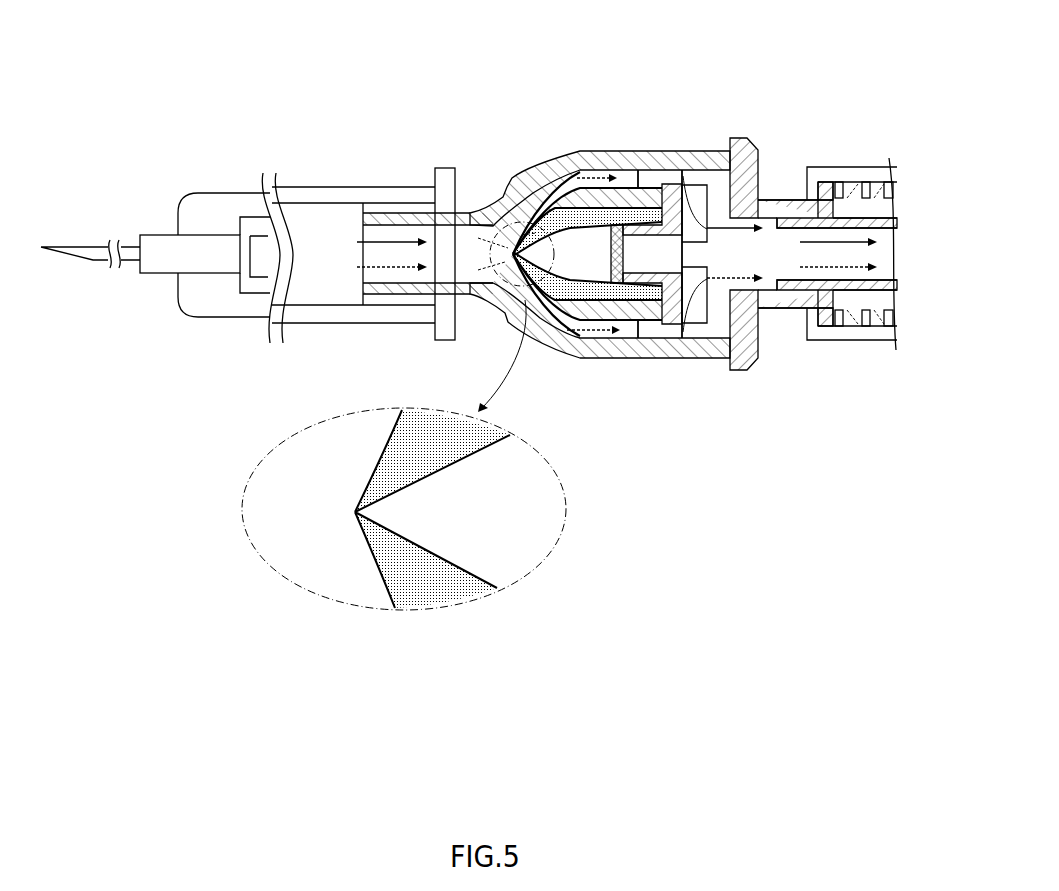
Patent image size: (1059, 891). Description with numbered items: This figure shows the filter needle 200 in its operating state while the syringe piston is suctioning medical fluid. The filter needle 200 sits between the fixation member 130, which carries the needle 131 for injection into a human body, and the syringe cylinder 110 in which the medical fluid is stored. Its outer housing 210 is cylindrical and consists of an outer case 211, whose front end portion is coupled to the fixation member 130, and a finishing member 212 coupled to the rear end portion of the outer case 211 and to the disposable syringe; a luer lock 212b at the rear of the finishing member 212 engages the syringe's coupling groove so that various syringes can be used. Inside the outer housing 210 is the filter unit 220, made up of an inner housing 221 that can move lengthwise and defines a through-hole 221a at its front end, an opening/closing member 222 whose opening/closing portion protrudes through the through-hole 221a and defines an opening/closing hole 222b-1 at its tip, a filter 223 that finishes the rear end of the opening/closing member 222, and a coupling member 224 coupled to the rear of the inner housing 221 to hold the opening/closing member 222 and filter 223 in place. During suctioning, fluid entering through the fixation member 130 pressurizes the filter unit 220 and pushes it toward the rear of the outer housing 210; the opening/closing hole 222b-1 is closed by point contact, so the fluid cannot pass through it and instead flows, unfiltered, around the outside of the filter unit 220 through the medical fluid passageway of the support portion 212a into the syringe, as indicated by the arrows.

The syringe cylinder 110 is at (852, 182).
The fixation member 130 is at (390, 187).
The needle 131 is at (92, 259).
The filter needle 200 is at (513, 153).
The outer housing 210 is at (733, 458).
The outer case 211 is at (668, 358).
The finishing member 212 is at (745, 370).
The support portion 212a is at (735, 138).
The luer lock 212b is at (825, 326).
The filter unit 220 is at (733, 58).
The inner housing 221 is at (574, 152).
The through-hole 221a is at (585, 358).
The opening/closing member 222 is at (592, 208).
The opening/closing hole 222b-1 is at (508, 256).
The filter 223 is at (615, 225).
The coupling member 224 is at (668, 184).